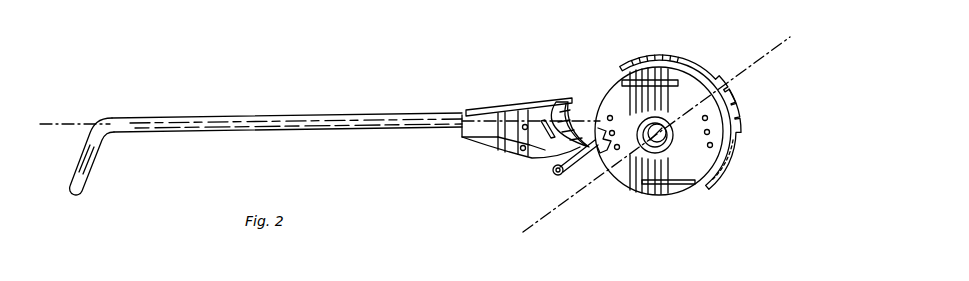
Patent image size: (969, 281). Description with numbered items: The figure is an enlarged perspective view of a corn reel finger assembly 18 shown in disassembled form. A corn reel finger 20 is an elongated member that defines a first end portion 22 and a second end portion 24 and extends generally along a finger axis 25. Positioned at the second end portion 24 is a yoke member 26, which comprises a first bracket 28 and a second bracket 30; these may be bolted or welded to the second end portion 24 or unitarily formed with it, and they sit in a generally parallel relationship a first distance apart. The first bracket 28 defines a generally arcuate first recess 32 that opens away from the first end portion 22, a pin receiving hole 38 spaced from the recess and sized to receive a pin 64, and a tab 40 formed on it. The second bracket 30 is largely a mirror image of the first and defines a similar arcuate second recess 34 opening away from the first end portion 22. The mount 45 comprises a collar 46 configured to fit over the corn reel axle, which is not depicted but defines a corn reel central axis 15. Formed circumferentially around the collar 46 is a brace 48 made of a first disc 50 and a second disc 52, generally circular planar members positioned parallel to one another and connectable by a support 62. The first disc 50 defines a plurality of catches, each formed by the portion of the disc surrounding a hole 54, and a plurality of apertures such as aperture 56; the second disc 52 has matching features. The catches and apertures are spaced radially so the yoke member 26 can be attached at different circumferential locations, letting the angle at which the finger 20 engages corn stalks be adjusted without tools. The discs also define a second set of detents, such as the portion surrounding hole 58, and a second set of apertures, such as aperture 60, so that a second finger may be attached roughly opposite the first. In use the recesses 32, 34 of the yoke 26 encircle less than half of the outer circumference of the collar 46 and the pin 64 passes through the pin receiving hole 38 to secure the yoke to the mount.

The corn reel central axis 15 is at (540, 223).
The corn reel finger assembly 18 is at (606, 55).
The corn reel finger 20 is at (221, 112).
The first end portion 22 is at (126, 110).
The second end portion 24 is at (516, 80).
The finger axis 25 is at (56, 122).
The yoke member 26 is at (494, 157).
The first bracket 28 is at (508, 143).
The second bracket 30 is at (527, 103).
The first recess 32 is at (571, 98).
The second recess 34 is at (590, 96).
The pin receiving hole 38 is at (498, 138).
The tab 40 is at (530, 163).
The mount 45 is at (718, 24).
The collar 46 is at (633, 183).
The brace 48 is at (673, 202).
The first disc 50 is at (700, 148).
The second disc 52 is at (740, 142).
The hole 54 is at (611, 162).
The aperture 56 is at (596, 150).
The hole 58 is at (727, 157).
The aperture 60 is at (740, 127).
The support 62 is at (704, 66).
The pin 64 is at (553, 173).